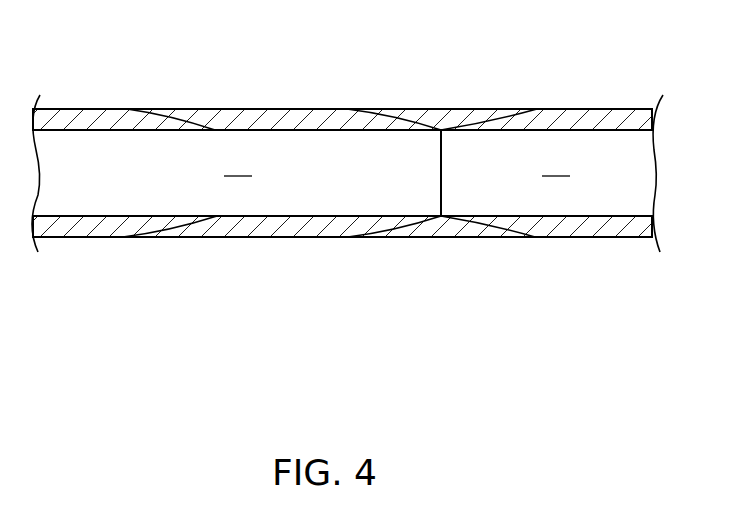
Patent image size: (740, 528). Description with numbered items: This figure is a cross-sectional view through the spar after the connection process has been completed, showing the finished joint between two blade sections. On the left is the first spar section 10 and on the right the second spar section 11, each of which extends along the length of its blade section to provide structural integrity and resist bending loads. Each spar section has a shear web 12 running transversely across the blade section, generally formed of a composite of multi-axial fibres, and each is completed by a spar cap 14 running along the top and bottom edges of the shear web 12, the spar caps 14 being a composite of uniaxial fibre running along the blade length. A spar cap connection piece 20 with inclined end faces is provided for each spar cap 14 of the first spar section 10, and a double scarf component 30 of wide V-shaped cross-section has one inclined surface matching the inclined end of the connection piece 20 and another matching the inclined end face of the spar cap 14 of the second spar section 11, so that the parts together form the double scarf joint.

The first spar section 10 is at (154, 289).
The second spar section 11 is at (547, 289).
The shear web 12 is at (397, 173).
The spar cap 14 is at (80, 118).
The spar cap connection piece 20 is at (255, 118).
The double scarf component 30 is at (452, 118).